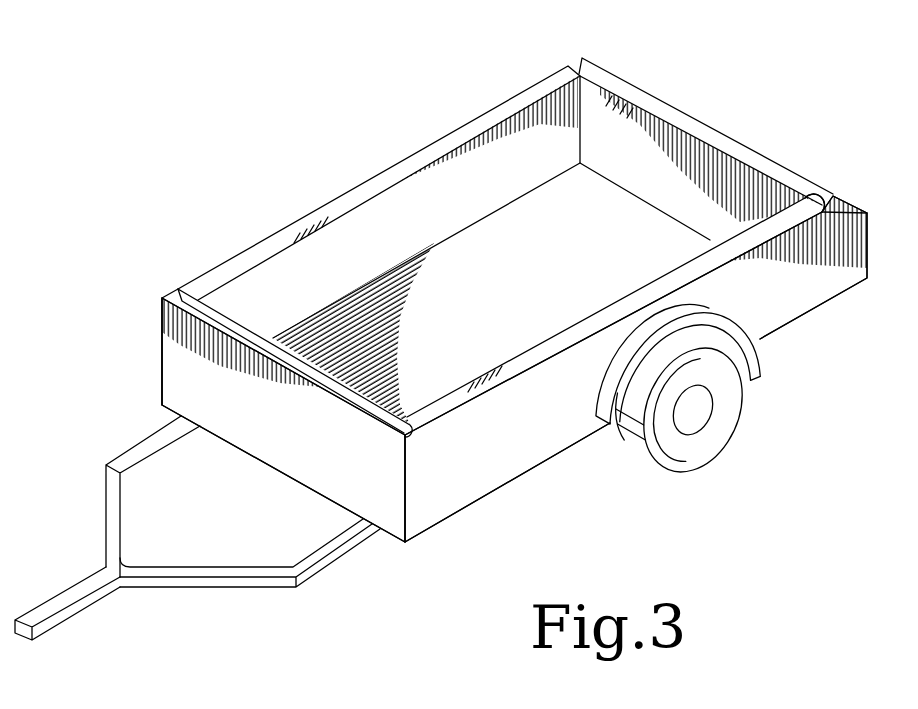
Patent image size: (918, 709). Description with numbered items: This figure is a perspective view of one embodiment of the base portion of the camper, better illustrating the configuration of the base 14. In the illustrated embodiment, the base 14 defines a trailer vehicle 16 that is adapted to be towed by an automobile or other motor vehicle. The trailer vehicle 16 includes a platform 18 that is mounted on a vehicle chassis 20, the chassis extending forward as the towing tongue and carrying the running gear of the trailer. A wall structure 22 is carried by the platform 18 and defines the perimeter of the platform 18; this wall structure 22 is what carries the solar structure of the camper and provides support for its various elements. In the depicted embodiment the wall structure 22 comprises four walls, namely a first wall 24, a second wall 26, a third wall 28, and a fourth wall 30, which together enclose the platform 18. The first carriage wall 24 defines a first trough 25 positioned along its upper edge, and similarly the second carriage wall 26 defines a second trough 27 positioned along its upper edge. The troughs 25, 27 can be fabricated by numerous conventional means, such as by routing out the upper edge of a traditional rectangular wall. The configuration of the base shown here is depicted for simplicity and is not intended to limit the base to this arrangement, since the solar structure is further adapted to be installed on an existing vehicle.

The base 14 is at (383, 76).
The trailer vehicle 16 is at (785, 359).
The platform 18 is at (572, 270).
The vehicle chassis 20 is at (110, 483).
The wall structure 22 is at (157, 363).
The first wall 24 is at (303, 447).
The first trough 25 is at (418, 430).
The second wall 26 is at (617, 126).
The second trough 27 is at (825, 203).
The third wall 28 is at (285, 275).
The fourth wall 30 is at (550, 412).